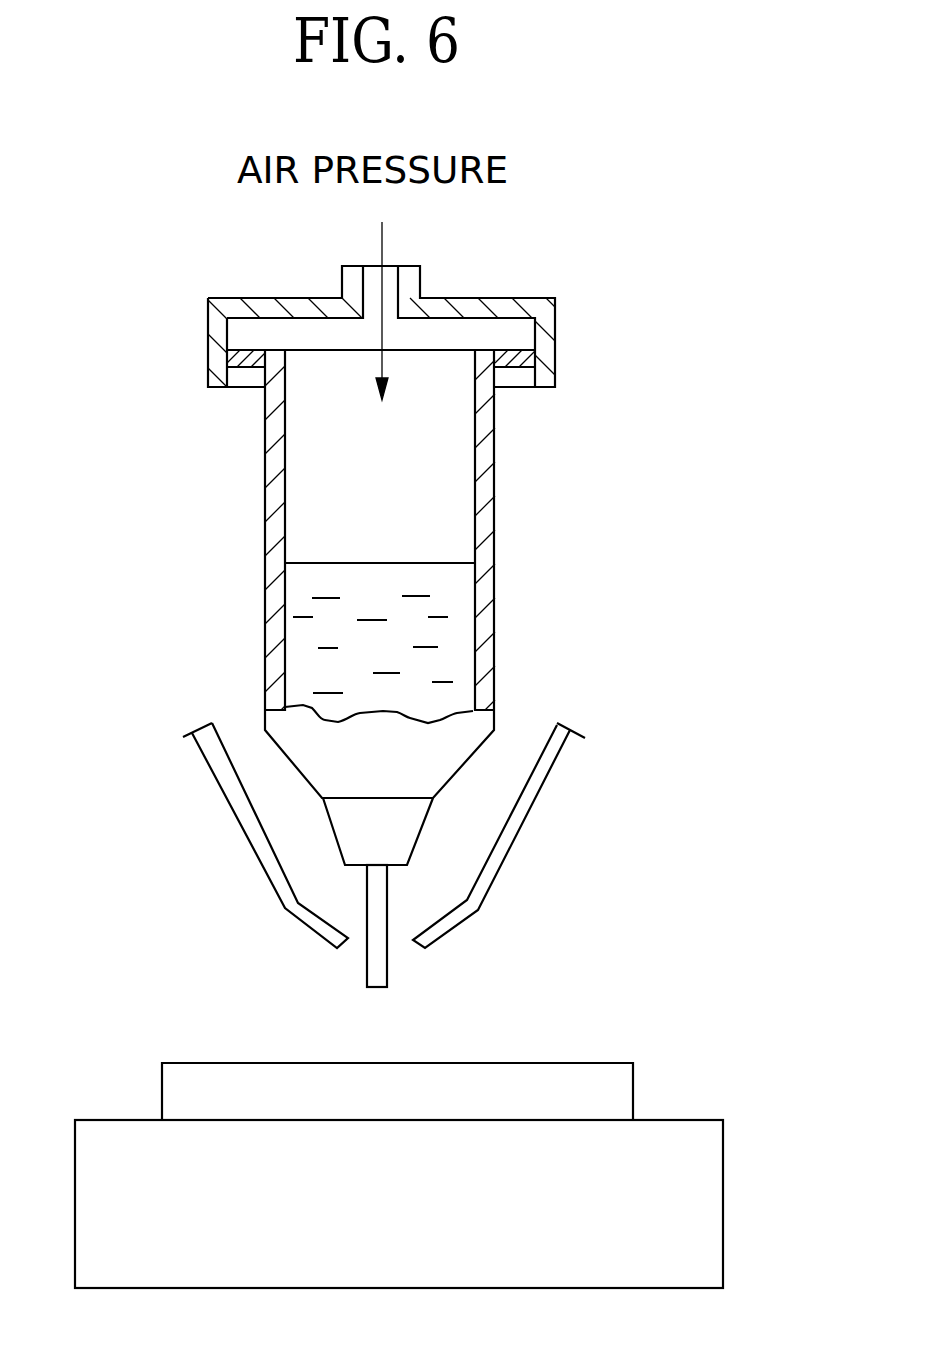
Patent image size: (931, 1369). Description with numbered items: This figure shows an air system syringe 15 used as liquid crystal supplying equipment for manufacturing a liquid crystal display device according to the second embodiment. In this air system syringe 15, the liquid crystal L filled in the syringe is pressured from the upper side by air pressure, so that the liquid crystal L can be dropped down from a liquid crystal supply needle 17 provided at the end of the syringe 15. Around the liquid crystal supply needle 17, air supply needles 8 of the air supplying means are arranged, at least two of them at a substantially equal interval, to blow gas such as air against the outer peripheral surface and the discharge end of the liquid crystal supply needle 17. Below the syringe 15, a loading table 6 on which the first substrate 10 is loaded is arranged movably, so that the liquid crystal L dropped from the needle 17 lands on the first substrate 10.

The air system syringe 15 is at (560, 437).
The liquid L is at (455, 653).
The liquid crystal supply needle 17 is at (380, 973).
The air supply needle 8 is at (242, 818).
The first substrate 10 is at (615, 1090).
The loading table 6 is at (715, 1197).